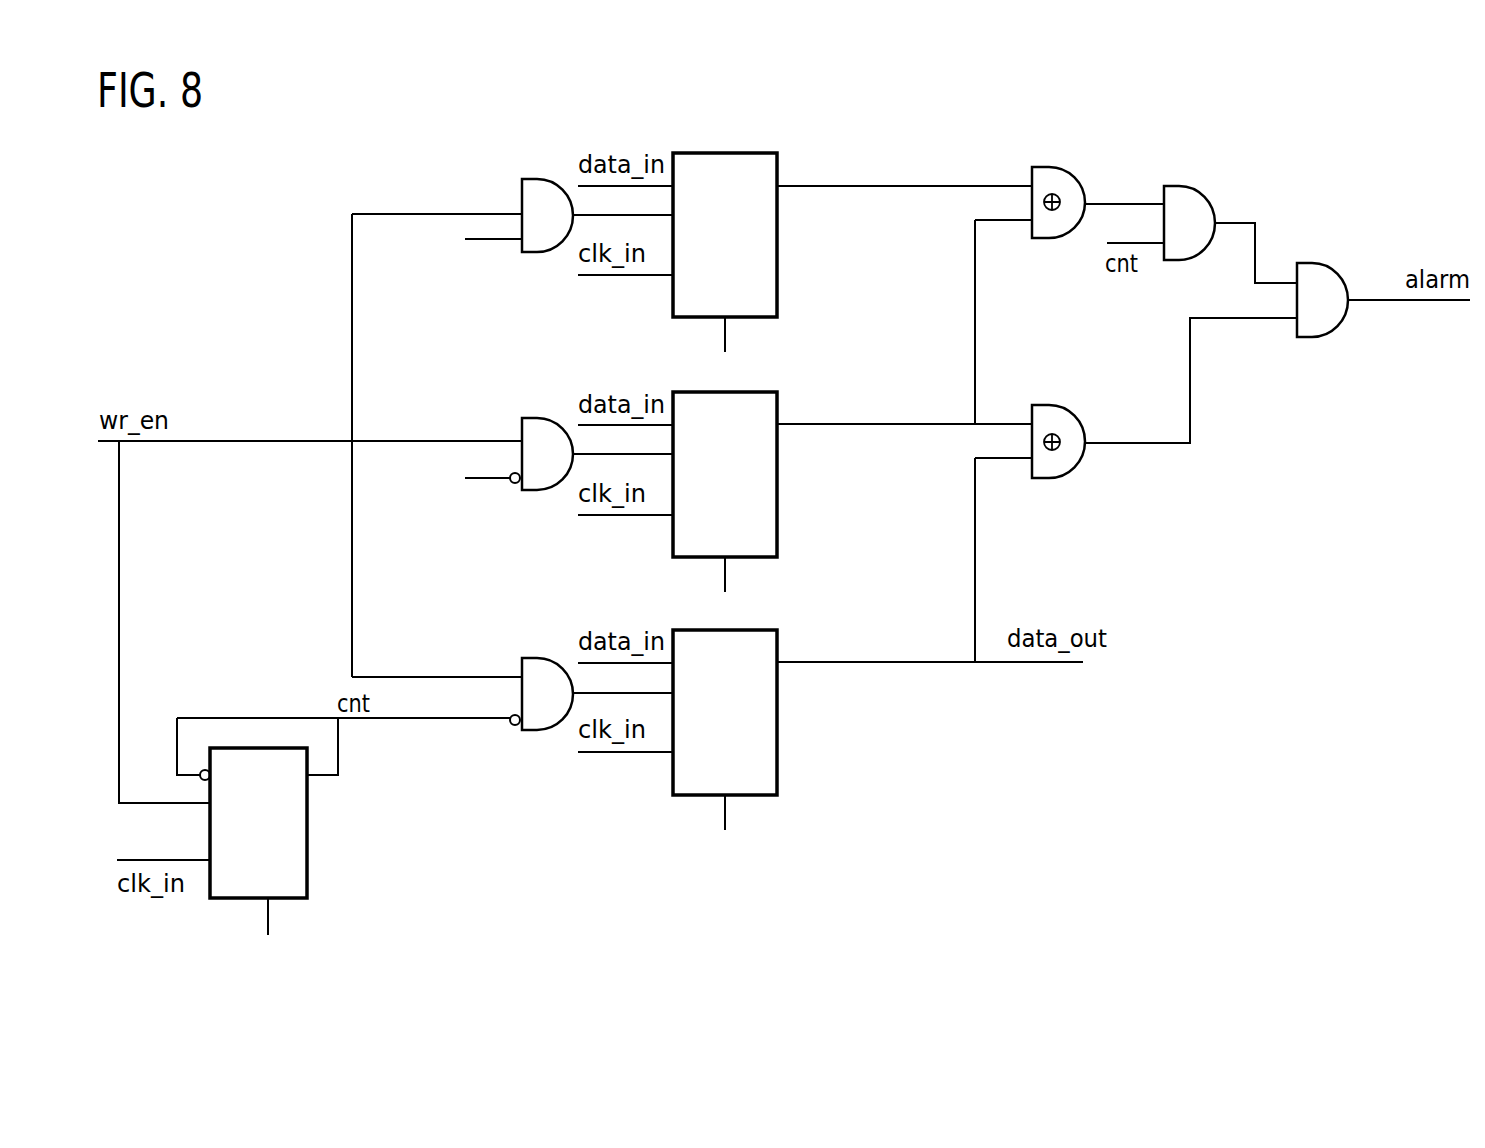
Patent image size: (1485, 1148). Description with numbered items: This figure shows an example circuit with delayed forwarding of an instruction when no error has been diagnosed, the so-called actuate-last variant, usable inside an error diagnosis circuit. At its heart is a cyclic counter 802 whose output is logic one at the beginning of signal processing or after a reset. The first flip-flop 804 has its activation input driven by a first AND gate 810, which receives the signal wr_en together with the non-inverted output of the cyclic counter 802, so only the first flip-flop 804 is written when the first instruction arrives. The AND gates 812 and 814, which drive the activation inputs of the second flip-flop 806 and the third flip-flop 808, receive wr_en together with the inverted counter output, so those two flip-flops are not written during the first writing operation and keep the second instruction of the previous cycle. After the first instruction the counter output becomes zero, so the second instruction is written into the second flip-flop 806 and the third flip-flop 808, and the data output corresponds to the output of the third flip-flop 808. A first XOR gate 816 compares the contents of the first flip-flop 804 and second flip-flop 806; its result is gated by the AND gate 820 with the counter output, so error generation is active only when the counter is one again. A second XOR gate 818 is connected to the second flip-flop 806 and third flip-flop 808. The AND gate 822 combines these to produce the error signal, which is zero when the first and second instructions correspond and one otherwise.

The cyclic counter 802 is at (308, 875).
The first flip-flop 804 is at (778, 272).
The second flip-flop 806 is at (778, 511).
The third flip-flop 808 is at (778, 748).
The first AND gate 810 is at (520, 194).
The AND gate 812 is at (520, 430).
The AND gate 814 is at (520, 666).
The first XOR gate 816 is at (1047, 165).
The second XOR gate 818 is at (1047, 405).
The AND gate 820 is at (1182, 185).
The AND gate 822 is at (1313, 262).